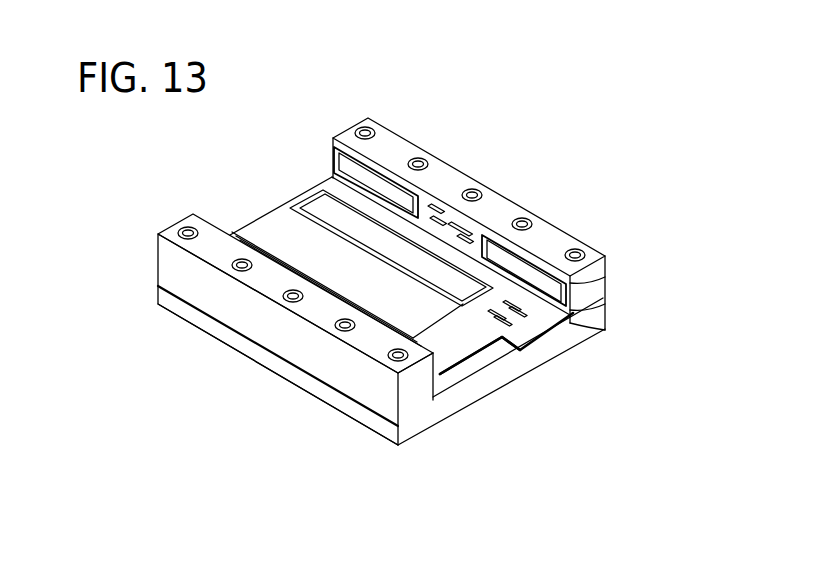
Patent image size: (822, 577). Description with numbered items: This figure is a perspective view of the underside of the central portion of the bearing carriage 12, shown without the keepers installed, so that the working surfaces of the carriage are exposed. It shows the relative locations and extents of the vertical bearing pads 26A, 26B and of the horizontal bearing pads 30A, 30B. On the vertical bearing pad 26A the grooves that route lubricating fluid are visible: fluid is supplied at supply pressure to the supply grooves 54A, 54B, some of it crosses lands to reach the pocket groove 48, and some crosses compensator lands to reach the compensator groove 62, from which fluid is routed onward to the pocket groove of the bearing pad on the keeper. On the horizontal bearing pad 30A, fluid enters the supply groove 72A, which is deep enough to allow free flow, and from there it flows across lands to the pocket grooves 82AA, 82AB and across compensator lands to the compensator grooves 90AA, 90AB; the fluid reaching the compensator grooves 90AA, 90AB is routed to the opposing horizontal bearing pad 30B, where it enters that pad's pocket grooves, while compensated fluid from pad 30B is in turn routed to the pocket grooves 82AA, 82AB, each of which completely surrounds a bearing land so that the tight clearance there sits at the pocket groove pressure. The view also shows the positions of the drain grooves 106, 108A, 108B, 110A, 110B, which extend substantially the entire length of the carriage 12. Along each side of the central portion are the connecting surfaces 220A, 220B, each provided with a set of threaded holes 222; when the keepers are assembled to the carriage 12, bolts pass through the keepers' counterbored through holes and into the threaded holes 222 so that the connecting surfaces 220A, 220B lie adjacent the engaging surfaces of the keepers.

The carriage 12 is at (243, 408).
The upper vertical bearing pad 26A is at (478, 320).
The vertical bearing pad 26B is at (484, 322).
The horizontal bearing pad 30A is at (478, 398).
The horizontal bearing pad 30B is at (333, 140).
The pocket groove 48 is at (297, 203).
The supply groove 54A is at (566, 318).
The supply groove 54B is at (562, 325).
The compensator groove 62 is at (560, 324).
The supply groove 72A is at (443, 212).
The pocket groove 82AA is at (330, 162).
The pocket groove 82AB is at (607, 300).
The compensator groove 90AA is at (437, 207).
The compensator groove 90AB is at (471, 236).
The drain groove 106 is at (270, 226).
The drain groove 108A is at (446, 405).
The drain groove 108B is at (604, 333).
The drain groove 110A is at (433, 400).
The drain groove 110B is at (606, 285).
The connecting surface 220A is at (217, 250).
The connecting surface 220B is at (393, 144).
The threaded holes 222 is at (363, 126).